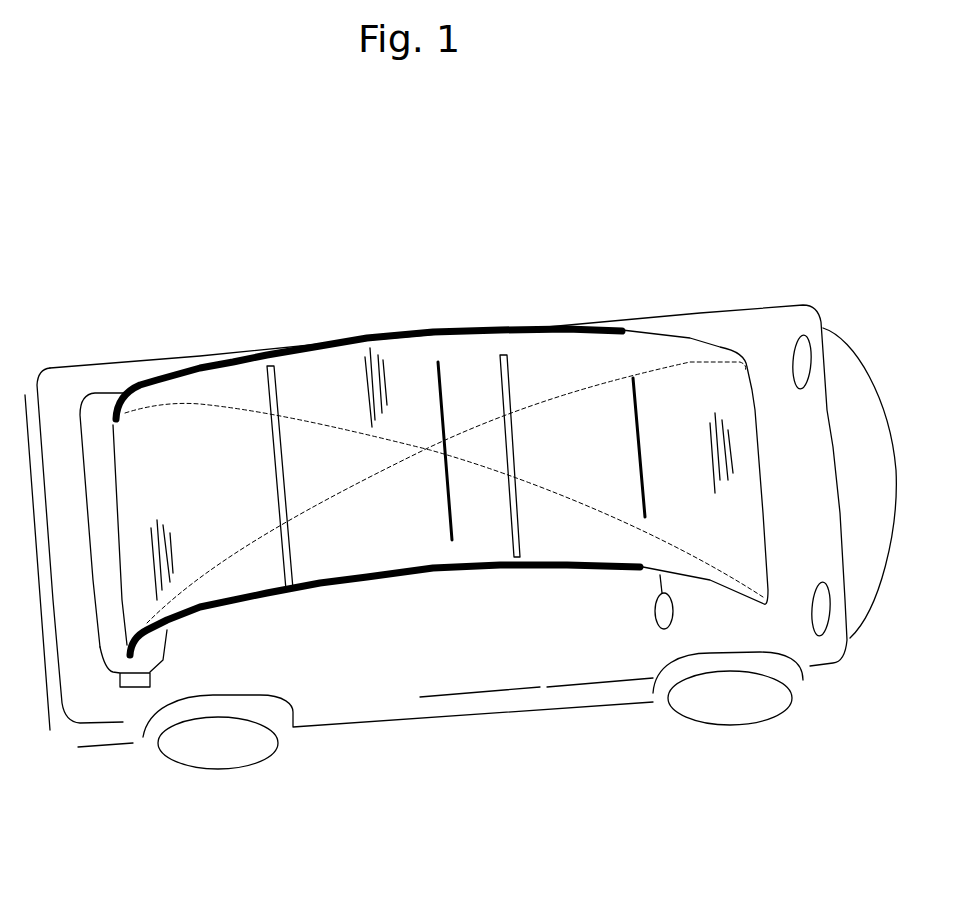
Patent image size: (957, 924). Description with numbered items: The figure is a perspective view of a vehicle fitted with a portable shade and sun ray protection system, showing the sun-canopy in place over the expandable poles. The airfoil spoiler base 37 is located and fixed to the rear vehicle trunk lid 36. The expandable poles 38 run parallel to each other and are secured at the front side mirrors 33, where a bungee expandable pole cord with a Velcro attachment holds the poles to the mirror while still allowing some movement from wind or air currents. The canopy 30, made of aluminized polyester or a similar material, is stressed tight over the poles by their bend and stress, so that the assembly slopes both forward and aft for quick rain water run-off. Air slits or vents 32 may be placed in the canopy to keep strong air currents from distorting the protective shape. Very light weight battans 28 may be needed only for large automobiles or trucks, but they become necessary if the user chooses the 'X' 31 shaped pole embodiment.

The battans 28 is at (277, 405).
The canopy 30 is at (199, 497).
The 'X' shaped pole embodiment 31 is at (600, 380).
The air slits or vents 32 is at (444, 408).
The front side mirrors 33 is at (660, 575).
The rear vehicle trunk lid 36 is at (78, 618).
The airfoil spoiler base 37 is at (93, 410).
The expandable poles 38 is at (385, 580).